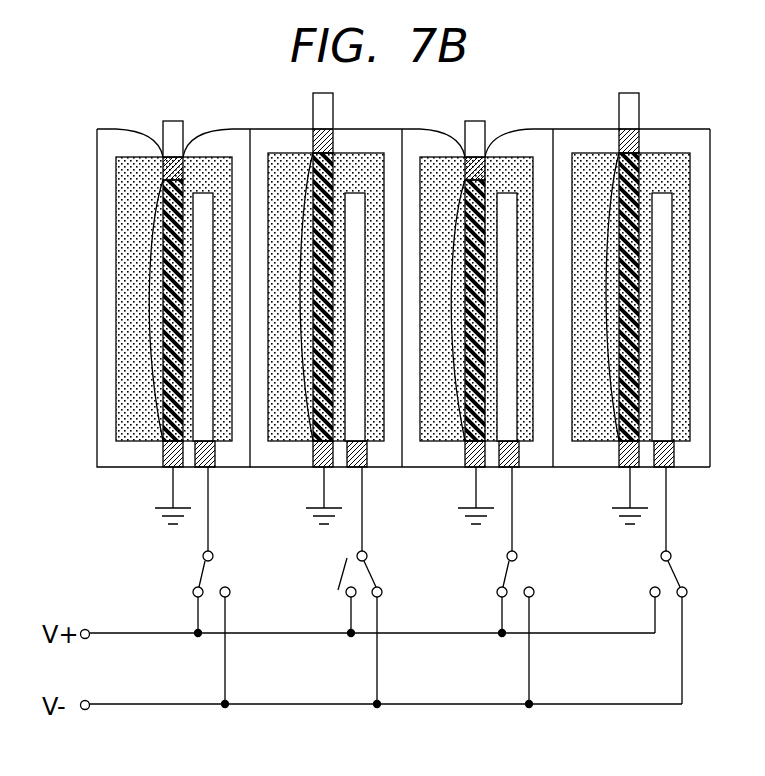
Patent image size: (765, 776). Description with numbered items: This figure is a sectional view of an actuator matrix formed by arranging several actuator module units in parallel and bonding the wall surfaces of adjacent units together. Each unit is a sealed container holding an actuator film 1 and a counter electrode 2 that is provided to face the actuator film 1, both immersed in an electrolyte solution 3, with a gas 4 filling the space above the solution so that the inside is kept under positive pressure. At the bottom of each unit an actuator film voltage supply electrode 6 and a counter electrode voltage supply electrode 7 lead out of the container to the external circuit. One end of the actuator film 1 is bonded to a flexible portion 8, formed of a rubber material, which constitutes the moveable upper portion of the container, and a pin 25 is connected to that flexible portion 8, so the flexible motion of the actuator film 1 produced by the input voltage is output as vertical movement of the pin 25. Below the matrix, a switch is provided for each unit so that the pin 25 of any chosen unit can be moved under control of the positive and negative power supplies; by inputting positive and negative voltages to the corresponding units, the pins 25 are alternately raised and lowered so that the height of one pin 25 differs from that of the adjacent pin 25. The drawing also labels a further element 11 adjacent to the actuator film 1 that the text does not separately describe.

The actuator film 1 is at (148, 229).
The counter electrode 2 is at (205, 378).
The electrolyte solution 3 is at (128, 390).
The gas 4 is at (215, 140).
The actuator film voltage supply electrode 6 is at (168, 468).
The counter electrode voltage supply electrode 7 is at (207, 455).
The flexible portion 8 is at (122, 129).
The separator 11 is at (140, 281).
The pin 25 is at (168, 142).